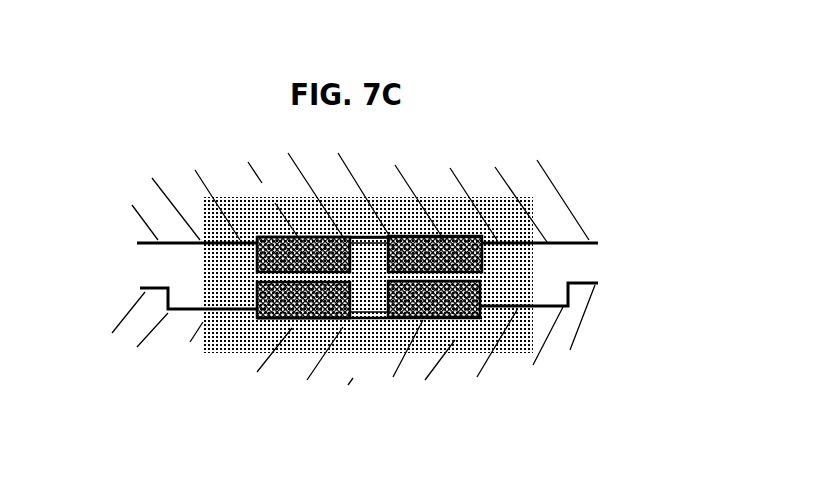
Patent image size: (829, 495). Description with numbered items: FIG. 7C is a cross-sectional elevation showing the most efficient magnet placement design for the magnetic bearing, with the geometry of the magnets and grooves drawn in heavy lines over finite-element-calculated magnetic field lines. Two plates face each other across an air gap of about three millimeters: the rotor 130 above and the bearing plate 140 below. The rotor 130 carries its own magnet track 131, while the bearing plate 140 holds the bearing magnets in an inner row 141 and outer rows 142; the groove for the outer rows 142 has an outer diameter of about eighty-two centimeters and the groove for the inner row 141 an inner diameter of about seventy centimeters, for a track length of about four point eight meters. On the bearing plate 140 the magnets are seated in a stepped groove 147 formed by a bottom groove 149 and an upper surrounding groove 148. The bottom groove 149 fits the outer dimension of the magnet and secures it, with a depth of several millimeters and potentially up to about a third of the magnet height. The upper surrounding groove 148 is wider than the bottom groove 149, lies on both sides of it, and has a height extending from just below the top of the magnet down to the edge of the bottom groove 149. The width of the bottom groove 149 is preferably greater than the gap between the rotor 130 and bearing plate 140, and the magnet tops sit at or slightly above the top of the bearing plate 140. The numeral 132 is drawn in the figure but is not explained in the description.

The rotor 130 is at (262, 199).
The magnet track 131 is at (442, 252).
The second upper electrode 132 is at (278, 262).
The bearing plate 140 is at (390, 369).
The inner row 141 is at (437, 303).
The outer rows 142 is at (310, 298).
The stepped groove 147 is at (183, 303).
The upper surrounding groove 148 is at (220, 320).
The bottom groove 149 is at (273, 323).